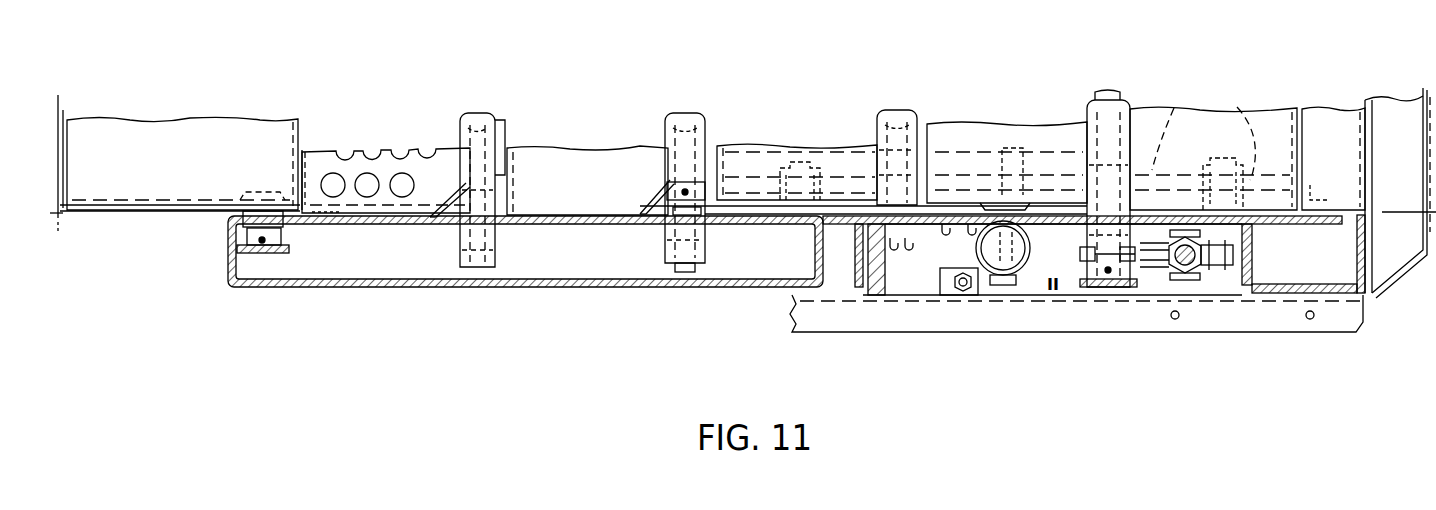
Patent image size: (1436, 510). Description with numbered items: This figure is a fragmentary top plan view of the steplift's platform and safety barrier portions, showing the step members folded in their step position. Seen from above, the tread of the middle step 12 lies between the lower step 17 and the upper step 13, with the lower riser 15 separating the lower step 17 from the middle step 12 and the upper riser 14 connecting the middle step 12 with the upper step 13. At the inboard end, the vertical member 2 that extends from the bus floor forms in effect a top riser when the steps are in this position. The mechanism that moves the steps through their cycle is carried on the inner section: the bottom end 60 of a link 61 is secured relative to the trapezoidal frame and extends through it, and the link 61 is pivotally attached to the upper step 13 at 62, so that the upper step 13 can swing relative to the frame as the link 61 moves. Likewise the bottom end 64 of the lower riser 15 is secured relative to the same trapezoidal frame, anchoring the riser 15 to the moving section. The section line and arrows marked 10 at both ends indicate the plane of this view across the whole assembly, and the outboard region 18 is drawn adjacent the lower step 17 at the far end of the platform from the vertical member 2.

The panel wall assembly 10 is at (58, 95).
The box compartment 18 is at (192, 163).
The lower step 17 is at (456, 183).
The lower riser 15 is at (598, 190).
The middle step 12 is at (758, 191).
The upper riser 14 is at (1078, 163).
The upper step 13 is at (1221, 145).
The vertical member 2 is at (1345, 153).
The bottom end of link 60 is at (780, 187).
The link 61 is at (1175, 108).
The pivot attachment of link to upper step 62 is at (1237, 107).
The bottom end of riser 64 is at (437, 218).